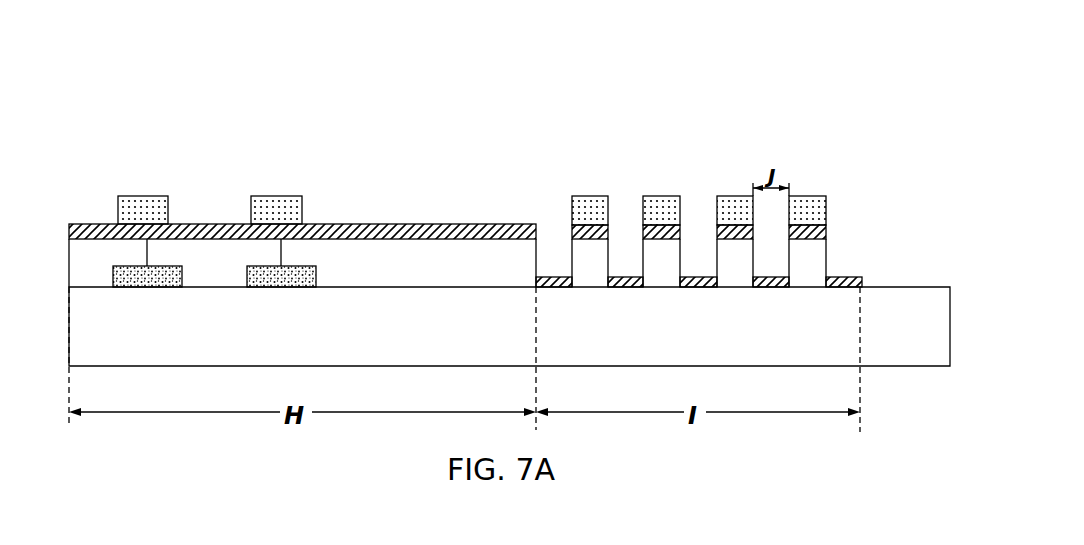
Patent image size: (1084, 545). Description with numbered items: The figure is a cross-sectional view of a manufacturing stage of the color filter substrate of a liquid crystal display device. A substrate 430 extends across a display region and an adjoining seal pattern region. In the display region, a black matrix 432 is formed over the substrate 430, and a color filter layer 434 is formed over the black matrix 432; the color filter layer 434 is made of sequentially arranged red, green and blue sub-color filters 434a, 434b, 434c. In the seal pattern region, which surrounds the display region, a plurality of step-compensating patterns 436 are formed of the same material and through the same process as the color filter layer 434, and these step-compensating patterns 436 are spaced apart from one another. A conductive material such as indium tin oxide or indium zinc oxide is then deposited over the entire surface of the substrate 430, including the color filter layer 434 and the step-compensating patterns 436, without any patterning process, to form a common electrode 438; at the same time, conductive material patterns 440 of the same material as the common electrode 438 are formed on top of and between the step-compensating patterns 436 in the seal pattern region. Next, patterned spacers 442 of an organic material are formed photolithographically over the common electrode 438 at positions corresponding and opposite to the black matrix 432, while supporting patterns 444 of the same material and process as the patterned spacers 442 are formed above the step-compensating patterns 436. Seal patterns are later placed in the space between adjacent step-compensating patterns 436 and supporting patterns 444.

The substrate 430 is at (925, 340).
The black matrix 432 is at (143, 287).
The color filter layer 434 is at (323, 98).
The red sub-color filter 434a is at (87, 245).
The green sub-color filter 434b is at (215, 245).
The blue sub-color filter 434c is at (343, 245).
The step-compensating pattern 436 is at (606, 205).
The common electrode 438 is at (447, 224).
The conductive material pattern 440 is at (665, 197).
The patterned spacer 442 is at (140, 200).
The supporting pattern 444 is at (607, 197).